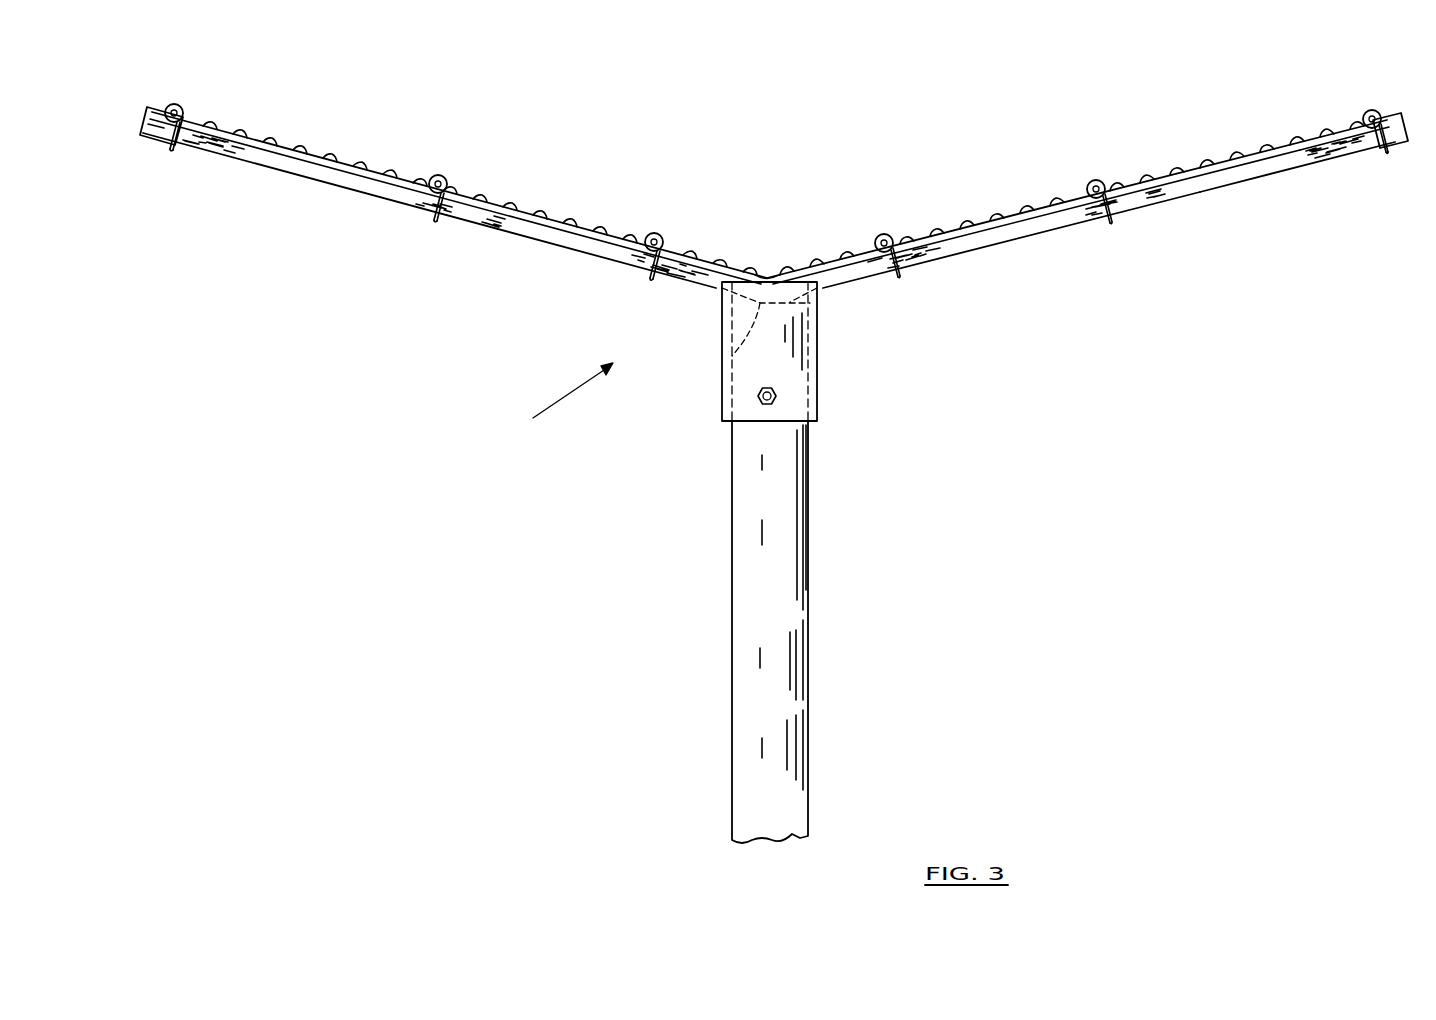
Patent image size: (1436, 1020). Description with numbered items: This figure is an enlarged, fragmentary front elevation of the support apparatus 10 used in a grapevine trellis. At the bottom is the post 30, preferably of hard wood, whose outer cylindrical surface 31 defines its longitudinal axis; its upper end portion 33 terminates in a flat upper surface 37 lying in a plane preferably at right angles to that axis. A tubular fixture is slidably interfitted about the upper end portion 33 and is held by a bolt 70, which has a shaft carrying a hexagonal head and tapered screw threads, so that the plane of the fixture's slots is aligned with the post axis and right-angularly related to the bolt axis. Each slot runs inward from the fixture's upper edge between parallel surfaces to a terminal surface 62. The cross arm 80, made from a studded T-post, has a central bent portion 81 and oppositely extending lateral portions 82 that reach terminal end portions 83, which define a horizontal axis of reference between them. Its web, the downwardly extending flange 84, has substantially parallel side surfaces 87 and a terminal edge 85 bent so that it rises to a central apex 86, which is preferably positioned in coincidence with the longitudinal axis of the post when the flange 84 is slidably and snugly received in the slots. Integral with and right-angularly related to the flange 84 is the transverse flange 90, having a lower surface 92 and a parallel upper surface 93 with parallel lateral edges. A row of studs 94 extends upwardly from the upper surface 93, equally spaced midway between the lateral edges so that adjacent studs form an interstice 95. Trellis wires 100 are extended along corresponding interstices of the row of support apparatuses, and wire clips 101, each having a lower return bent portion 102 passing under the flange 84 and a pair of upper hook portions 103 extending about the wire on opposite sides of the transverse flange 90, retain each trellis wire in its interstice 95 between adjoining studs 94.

The support apparatus 10 is at (560, 399).
The post 30 is at (732, 665).
The outer cylindrical surface 31 is at (779, 511).
The upper end portion 33 is at (810, 460).
The flat upper surface 37 is at (818, 307).
The terminal surface 62 is at (703, 281).
The bolt 70 is at (758, 397).
The cross arm 80 is at (588, 215).
The central bent portion 81 is at (767, 276).
The lateral portions 82 is at (507, 225).
The terminal end portions 83 is at (147, 120).
The downwardly extending flange 84 is at (990, 237).
The terminal edge 85 is at (1042, 238).
The apex 86 is at (732, 354).
The side surfaces 87 is at (343, 180).
The transverse flange 90 is at (1135, 183).
The lower surface 92 is at (1202, 172).
The upper surface 93 is at (1190, 167).
The studs 94 is at (497, 200).
The interstice 95 is at (342, 162).
The trellis wires 100 is at (181, 106).
The wire clips 101 is at (180, 133).
The lower return bent portion 102 is at (437, 222).
The upper hook portions 103 is at (450, 185).